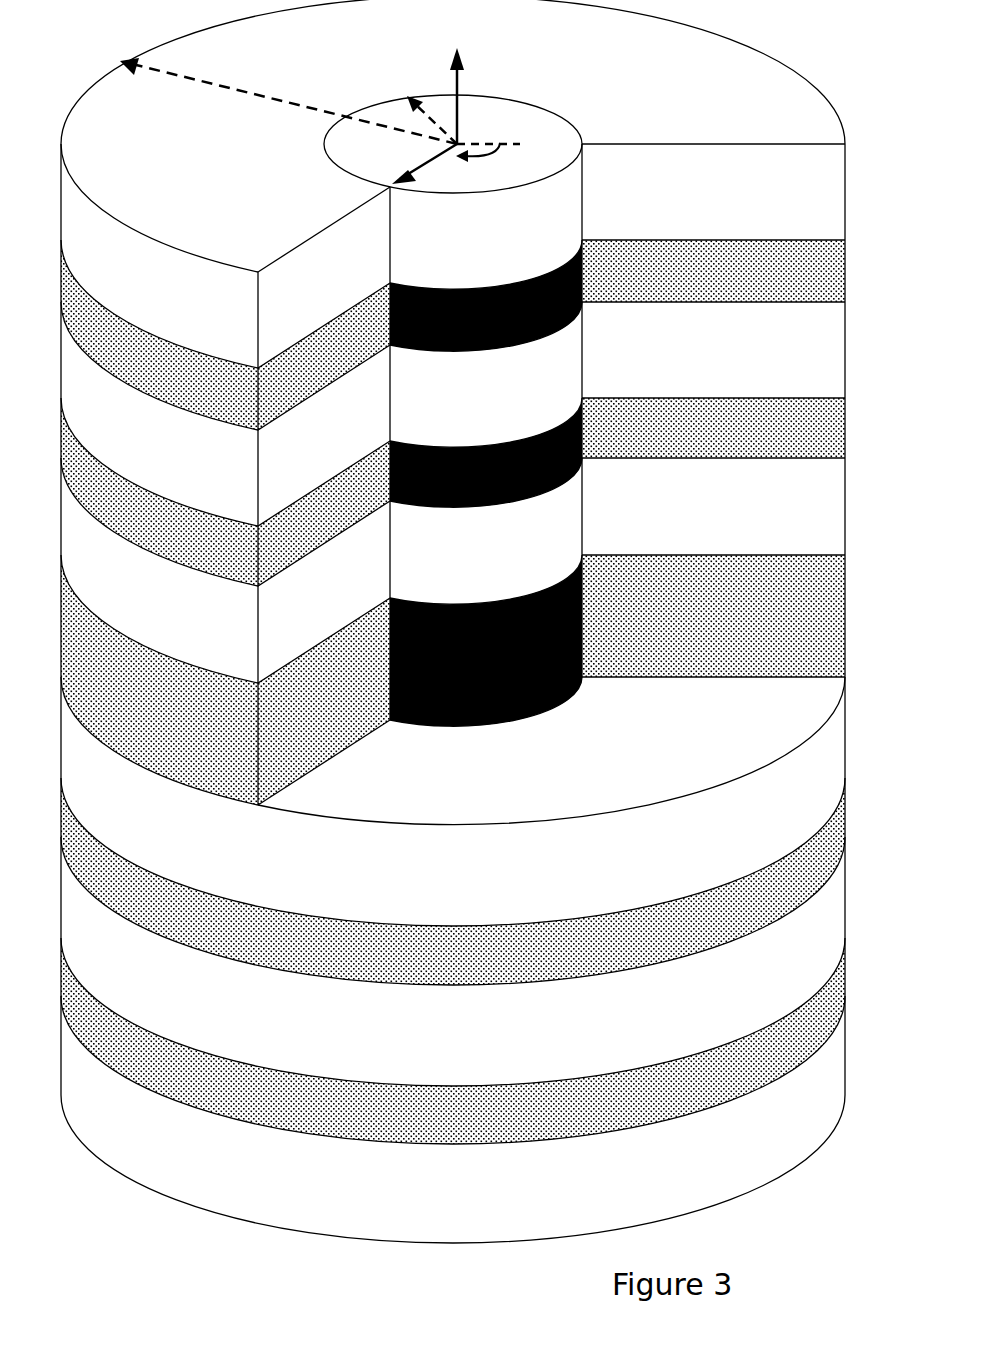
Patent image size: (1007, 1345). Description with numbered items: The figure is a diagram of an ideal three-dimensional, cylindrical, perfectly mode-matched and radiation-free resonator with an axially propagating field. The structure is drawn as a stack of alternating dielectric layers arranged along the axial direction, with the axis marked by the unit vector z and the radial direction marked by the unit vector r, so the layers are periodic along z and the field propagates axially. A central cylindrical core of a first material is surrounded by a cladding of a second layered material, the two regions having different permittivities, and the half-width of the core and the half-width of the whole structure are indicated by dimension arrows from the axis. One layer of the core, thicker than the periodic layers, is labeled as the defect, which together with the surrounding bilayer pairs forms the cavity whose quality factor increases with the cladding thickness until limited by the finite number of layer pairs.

The defect layer defect is at (495, 645).
The z-axis unit vector z is at (484, 27).
The radial unit vector r is at (394, 152).